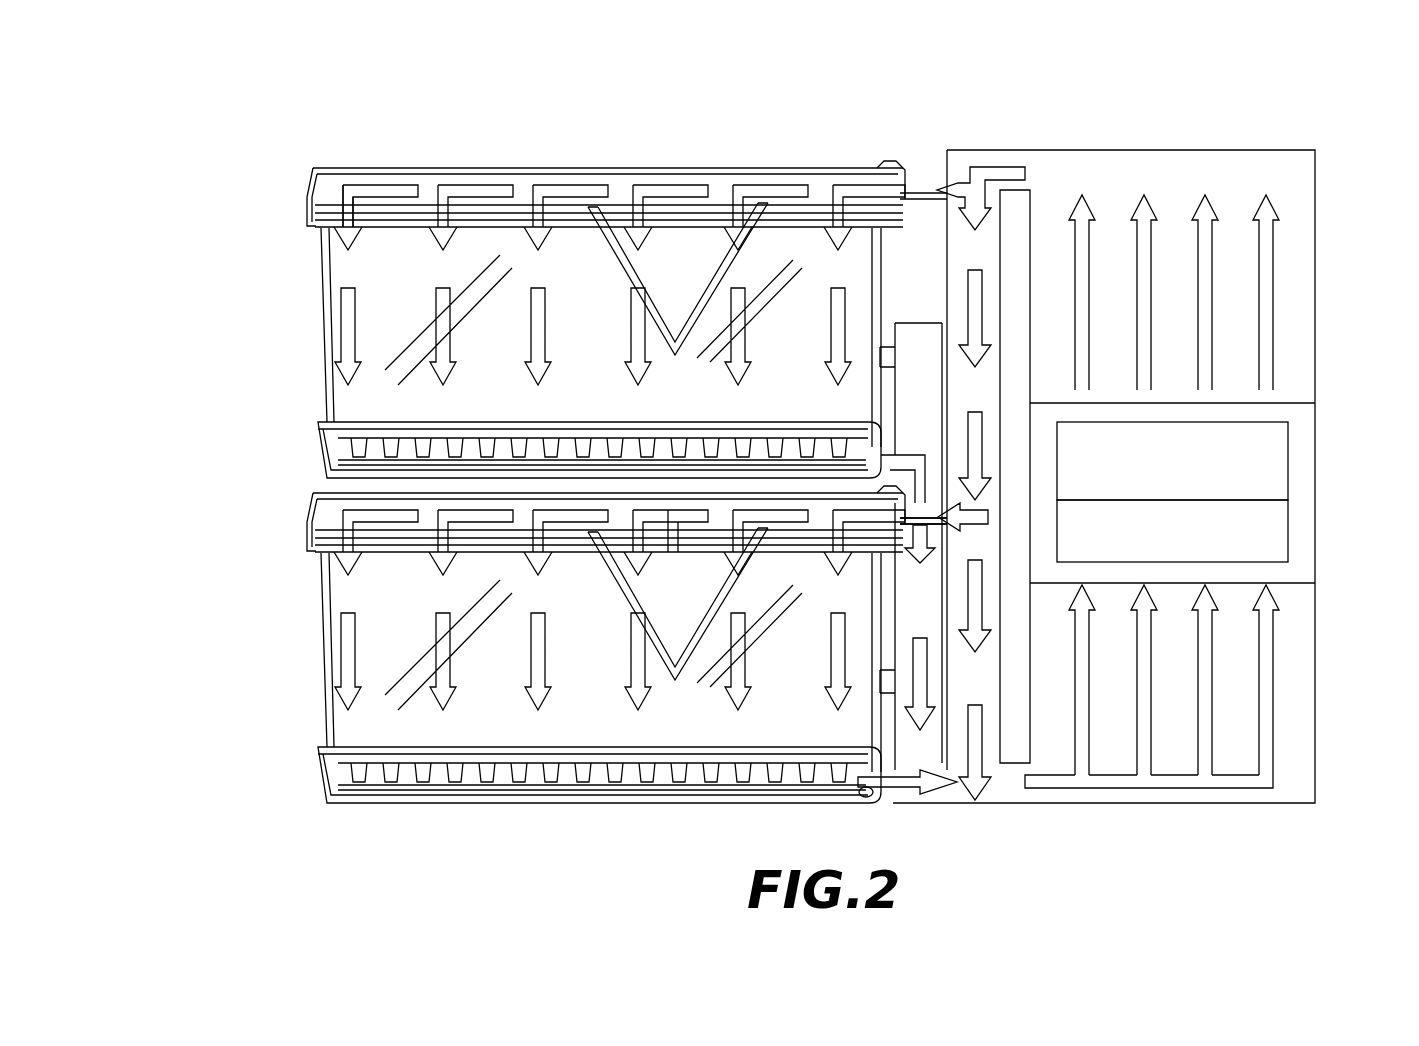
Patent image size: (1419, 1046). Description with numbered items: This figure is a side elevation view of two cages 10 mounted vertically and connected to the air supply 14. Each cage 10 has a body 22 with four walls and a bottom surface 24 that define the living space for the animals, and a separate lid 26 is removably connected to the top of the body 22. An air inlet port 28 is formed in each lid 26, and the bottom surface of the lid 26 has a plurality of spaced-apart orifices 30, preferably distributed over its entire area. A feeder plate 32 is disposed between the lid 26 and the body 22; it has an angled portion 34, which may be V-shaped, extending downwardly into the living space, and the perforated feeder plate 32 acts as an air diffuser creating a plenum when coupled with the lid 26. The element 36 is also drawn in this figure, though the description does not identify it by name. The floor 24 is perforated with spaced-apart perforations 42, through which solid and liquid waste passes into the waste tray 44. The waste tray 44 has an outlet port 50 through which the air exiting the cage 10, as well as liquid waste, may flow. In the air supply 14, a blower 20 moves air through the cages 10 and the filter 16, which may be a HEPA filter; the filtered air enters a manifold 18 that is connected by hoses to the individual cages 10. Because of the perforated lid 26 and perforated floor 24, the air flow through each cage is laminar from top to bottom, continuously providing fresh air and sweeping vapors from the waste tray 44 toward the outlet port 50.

The cage 10 is at (280, 334).
The air supply 14 is at (1287, 740).
The filter 16 is at (1282, 553).
The manifold 18 is at (922, 188).
The blower 20 is at (1273, 470).
The body 22 is at (323, 290).
The bottom surface 24 is at (333, 442).
The lid 26 is at (525, 168).
The air inlet port 28 is at (877, 168).
The orifices 30 is at (478, 168).
The feeder plate 32 is at (318, 168).
The angled portion 34 is at (670, 290).
The perforated plate 36 is at (693, 213).
The perforations 42 is at (372, 445).
The waste tray 44 is at (327, 425).
The outlet port 50 is at (863, 796).